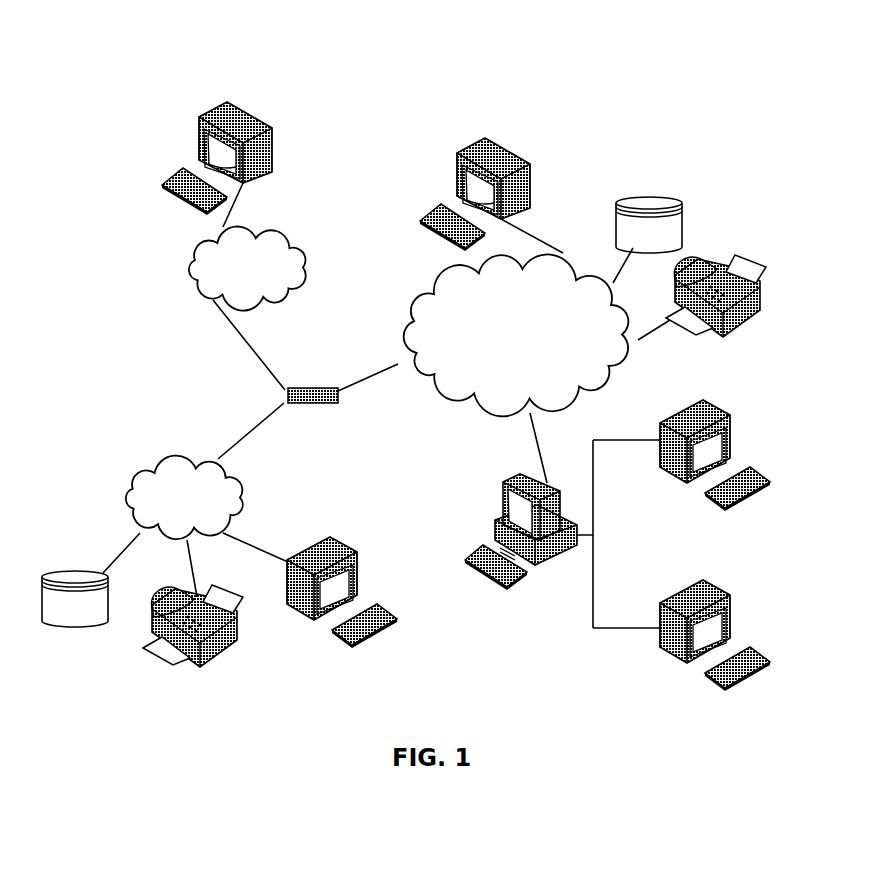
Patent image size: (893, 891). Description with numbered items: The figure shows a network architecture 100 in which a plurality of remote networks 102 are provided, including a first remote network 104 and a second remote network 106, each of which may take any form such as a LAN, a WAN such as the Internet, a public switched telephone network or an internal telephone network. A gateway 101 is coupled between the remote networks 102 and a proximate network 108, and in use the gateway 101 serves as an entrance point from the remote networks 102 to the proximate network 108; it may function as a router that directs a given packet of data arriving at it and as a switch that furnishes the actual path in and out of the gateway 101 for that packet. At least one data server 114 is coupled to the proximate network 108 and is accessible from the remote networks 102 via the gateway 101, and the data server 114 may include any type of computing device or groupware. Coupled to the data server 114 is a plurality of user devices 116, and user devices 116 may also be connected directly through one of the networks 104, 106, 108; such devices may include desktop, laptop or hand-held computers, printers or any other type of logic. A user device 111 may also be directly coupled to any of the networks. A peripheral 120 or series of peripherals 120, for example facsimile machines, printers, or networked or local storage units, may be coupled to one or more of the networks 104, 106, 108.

The architecture 100 is at (141, 86).
The gateway 101 is at (295, 387).
The remote networks 102 is at (162, 322).
The first remote network 104 is at (121, 478).
The second remote network 106 is at (307, 244).
The proximate network 108 is at (607, 388).
The user device 111 is at (527, 162).
The data server 114 is at (503, 493).
The user devices 116 is at (272, 128).
The peripheral 120 is at (75, 627).